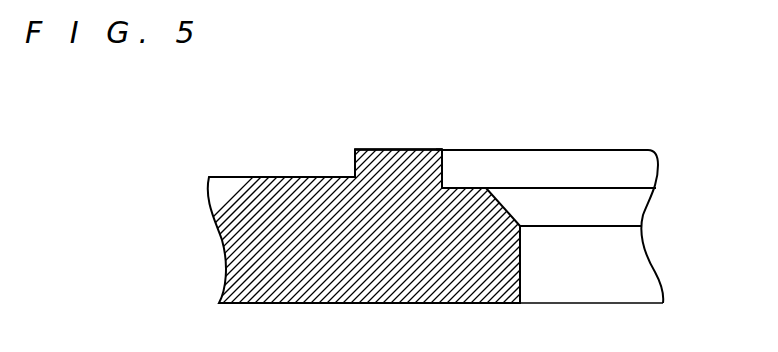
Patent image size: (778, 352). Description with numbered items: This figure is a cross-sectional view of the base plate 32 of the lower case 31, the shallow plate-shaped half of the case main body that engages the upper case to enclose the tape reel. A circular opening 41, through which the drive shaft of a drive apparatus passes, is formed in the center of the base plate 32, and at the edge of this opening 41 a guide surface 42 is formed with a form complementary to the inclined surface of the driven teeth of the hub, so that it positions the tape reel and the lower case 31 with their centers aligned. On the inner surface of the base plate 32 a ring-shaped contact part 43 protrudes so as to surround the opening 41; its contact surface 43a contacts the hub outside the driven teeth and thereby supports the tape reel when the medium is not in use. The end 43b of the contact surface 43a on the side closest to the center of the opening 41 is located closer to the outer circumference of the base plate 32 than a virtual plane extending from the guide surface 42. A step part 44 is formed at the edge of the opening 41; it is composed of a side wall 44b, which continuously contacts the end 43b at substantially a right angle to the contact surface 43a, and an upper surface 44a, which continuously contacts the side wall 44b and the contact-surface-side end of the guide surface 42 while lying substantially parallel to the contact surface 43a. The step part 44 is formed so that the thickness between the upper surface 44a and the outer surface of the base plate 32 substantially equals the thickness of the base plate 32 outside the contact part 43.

The lower case 31 is at (272, 110).
The base plate 32 is at (226, 253).
The opening 41 is at (623, 202).
The guide surface 42 is at (516, 212).
The contact part 43 is at (354, 164).
The contact surface 43a is at (375, 147).
The end of the contact surface 43b is at (439, 146).
The step part 44 is at (478, 167).
The upper surface 44a is at (471, 182).
The side wall 44b is at (446, 174).